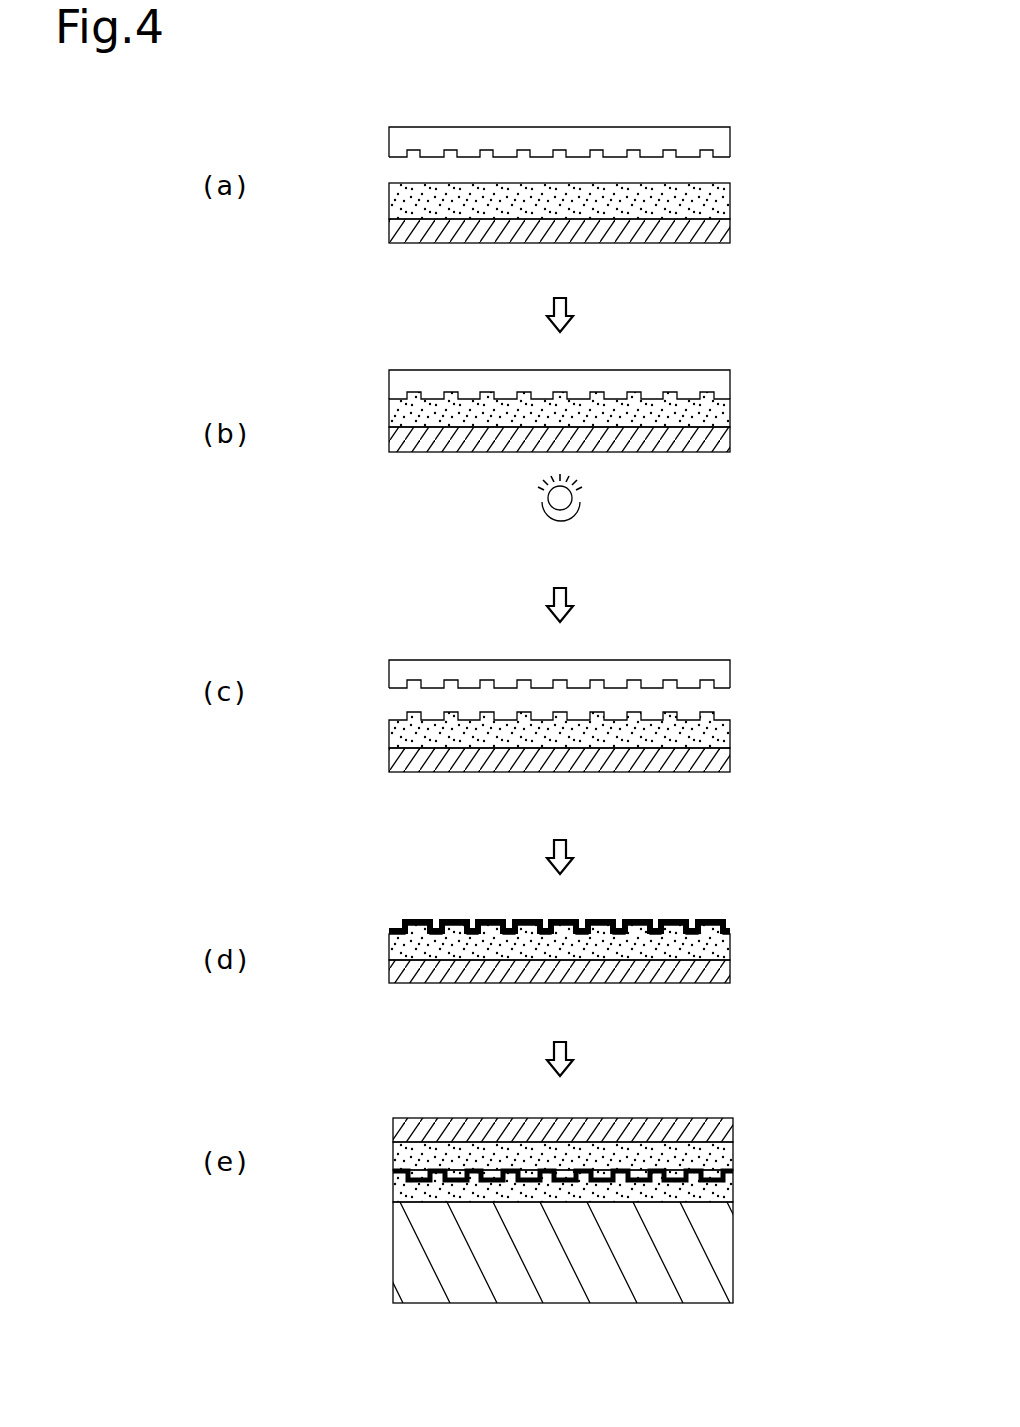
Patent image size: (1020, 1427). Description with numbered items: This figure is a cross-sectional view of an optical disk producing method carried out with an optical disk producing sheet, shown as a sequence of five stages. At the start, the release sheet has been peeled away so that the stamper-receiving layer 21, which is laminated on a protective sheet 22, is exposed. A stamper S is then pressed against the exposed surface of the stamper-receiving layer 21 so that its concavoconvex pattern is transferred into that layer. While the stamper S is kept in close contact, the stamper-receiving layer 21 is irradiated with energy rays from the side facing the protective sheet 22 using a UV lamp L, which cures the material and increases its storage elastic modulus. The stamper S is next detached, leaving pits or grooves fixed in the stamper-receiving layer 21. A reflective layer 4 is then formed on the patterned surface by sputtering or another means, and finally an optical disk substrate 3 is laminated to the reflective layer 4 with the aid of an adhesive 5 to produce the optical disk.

The stamper S is at (730, 137).
The stamper-receiving layer 21 is at (730, 205).
The protective sheet 22 is at (730, 237).
The UV lamp L is at (590, 503).
The reflective layer 4 is at (730, 925).
The adhesive 5 is at (733, 1195).
The optical disk substrate 3 is at (733, 1249).